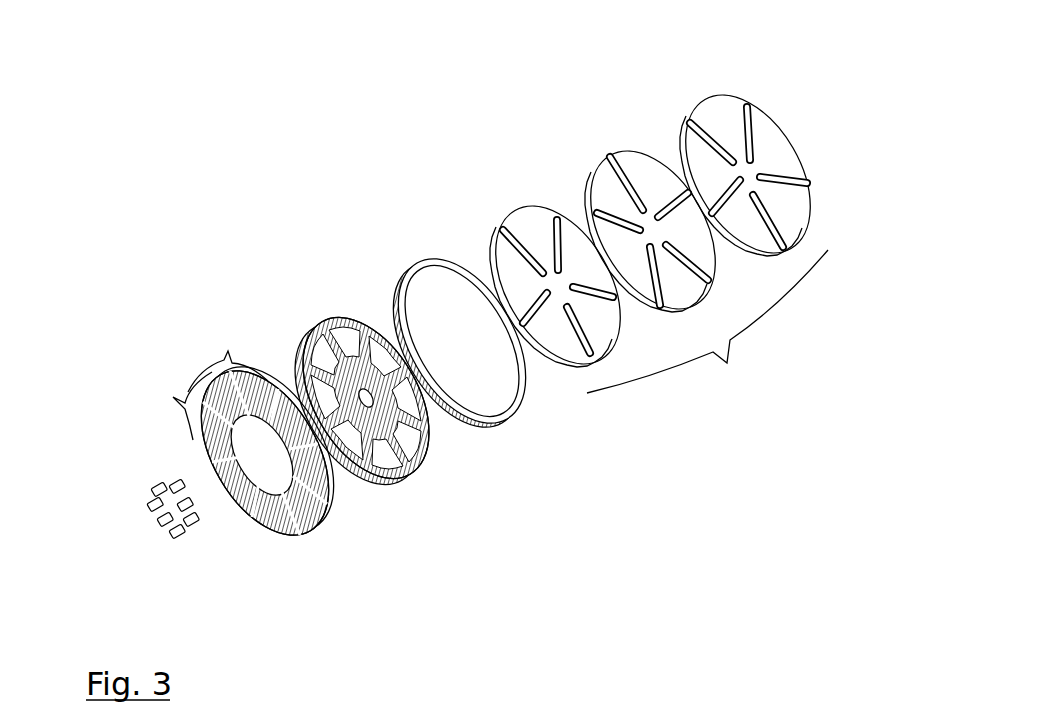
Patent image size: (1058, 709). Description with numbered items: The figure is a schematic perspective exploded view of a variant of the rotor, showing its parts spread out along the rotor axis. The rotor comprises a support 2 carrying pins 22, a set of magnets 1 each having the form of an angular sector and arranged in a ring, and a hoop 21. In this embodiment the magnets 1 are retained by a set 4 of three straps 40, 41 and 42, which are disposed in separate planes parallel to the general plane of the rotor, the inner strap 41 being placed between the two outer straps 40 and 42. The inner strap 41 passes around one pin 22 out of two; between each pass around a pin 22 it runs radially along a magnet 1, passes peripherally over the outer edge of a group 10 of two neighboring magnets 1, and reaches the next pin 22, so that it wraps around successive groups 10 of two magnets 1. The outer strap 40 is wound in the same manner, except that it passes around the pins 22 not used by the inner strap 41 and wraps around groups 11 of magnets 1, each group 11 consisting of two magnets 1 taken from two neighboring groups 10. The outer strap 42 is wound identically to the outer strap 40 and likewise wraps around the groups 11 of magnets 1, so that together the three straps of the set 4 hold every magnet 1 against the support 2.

The magnets 1 is at (257, 523).
The support 2 is at (394, 478).
The set of straps 4 is at (730, 373).
The group of two neighboring magnets 10 is at (173, 397).
The group of magnets 11 is at (222, 355).
The hoop 21 is at (507, 420).
The pins 22 is at (156, 527).
The outer strap 40 is at (508, 207).
The inner strap 41 is at (601, 160).
The outer strap 42 is at (703, 100).